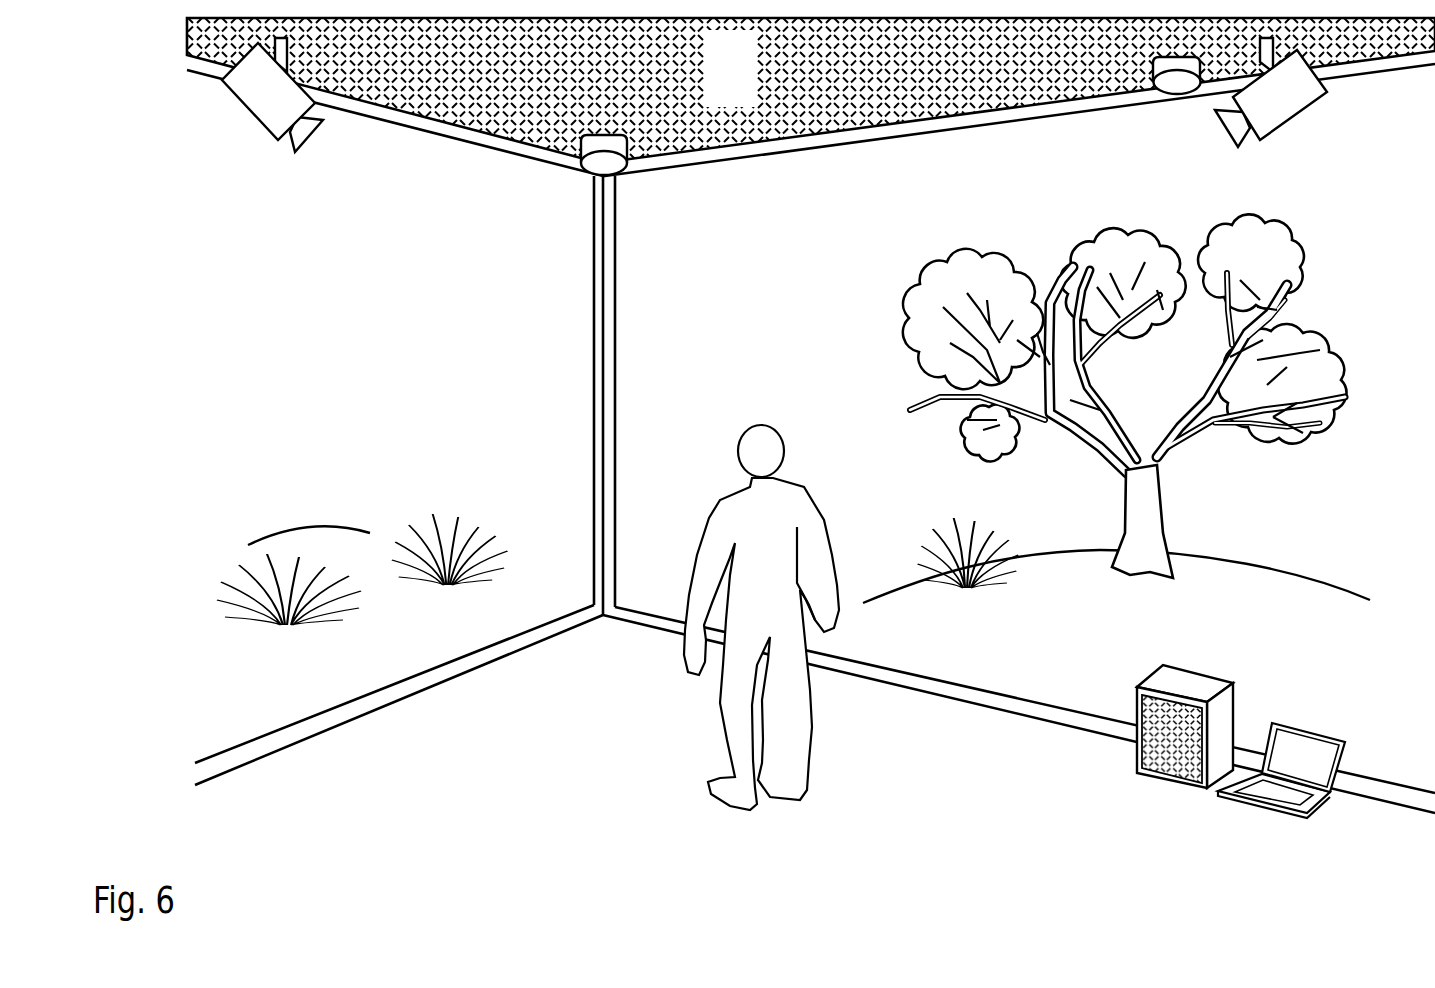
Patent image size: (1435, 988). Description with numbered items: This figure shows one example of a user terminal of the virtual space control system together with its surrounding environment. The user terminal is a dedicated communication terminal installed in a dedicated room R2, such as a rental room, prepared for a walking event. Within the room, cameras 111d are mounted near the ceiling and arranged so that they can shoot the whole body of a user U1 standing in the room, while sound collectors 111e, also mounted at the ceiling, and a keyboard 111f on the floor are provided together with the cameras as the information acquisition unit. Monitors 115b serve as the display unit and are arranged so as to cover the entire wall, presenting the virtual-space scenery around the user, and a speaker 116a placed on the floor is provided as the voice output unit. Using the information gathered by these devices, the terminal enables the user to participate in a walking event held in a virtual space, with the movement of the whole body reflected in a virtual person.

The dedicated room R2 is at (718, 98).
The cameras 111d is at (268, 98).
The sound collectors 111e is at (590, 168).
The monitors 115b is at (402, 663).
The user U1 is at (793, 473).
The speaker 116a is at (1187, 680).
The keyboard 111f is at (1288, 793).